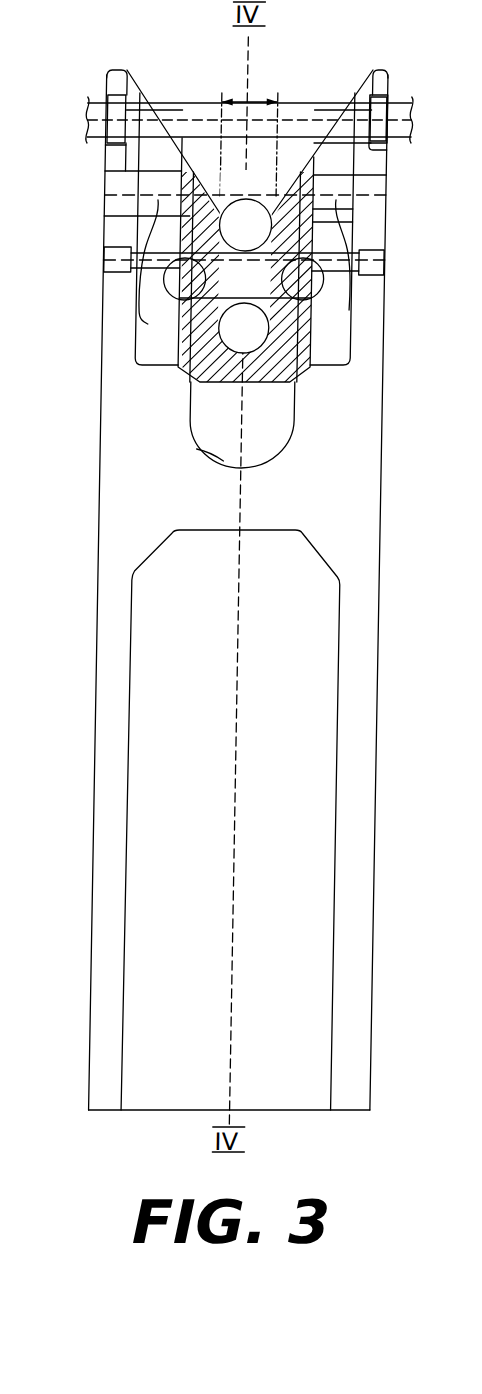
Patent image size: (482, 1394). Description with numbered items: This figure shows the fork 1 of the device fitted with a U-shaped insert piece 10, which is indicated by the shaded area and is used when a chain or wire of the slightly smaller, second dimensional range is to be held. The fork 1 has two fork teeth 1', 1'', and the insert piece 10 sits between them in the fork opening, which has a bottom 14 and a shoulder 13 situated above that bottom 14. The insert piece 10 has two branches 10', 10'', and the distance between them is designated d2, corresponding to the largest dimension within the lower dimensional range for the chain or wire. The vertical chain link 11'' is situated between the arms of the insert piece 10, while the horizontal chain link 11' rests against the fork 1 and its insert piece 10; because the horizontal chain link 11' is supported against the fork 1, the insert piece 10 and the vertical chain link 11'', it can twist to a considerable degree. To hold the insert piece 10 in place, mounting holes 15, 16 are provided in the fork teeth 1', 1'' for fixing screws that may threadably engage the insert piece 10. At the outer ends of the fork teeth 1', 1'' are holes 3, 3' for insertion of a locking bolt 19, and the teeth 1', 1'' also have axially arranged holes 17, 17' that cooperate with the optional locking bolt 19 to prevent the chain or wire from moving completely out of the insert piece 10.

The fork 1 is at (285, 592).
The fork tooth 1' is at (121, 123).
The fork tooth 1'' is at (387, 132).
The hole 3 is at (217, 105).
The hole 3' is at (416, 114).
The locking bolt 19 is at (198, 120).
The distance between branches d2 is at (256, 100).
The shoulder 13 is at (178, 373).
The axially arranged hole 17 is at (119, 229).
The axially arranged hole 17' is at (393, 229).
The vertical chain link 11'' is at (338, 225).
The horizontal chain link 11' is at (341, 322).
The branch 10' is at (111, 277).
The branch 10'' is at (394, 262).
The mounting hole 15 is at (141, 320).
The mounting hole 16 is at (322, 290).
The U-shaped insert piece 10 is at (310, 420).
The bottom of the fork opening 14 is at (201, 449).